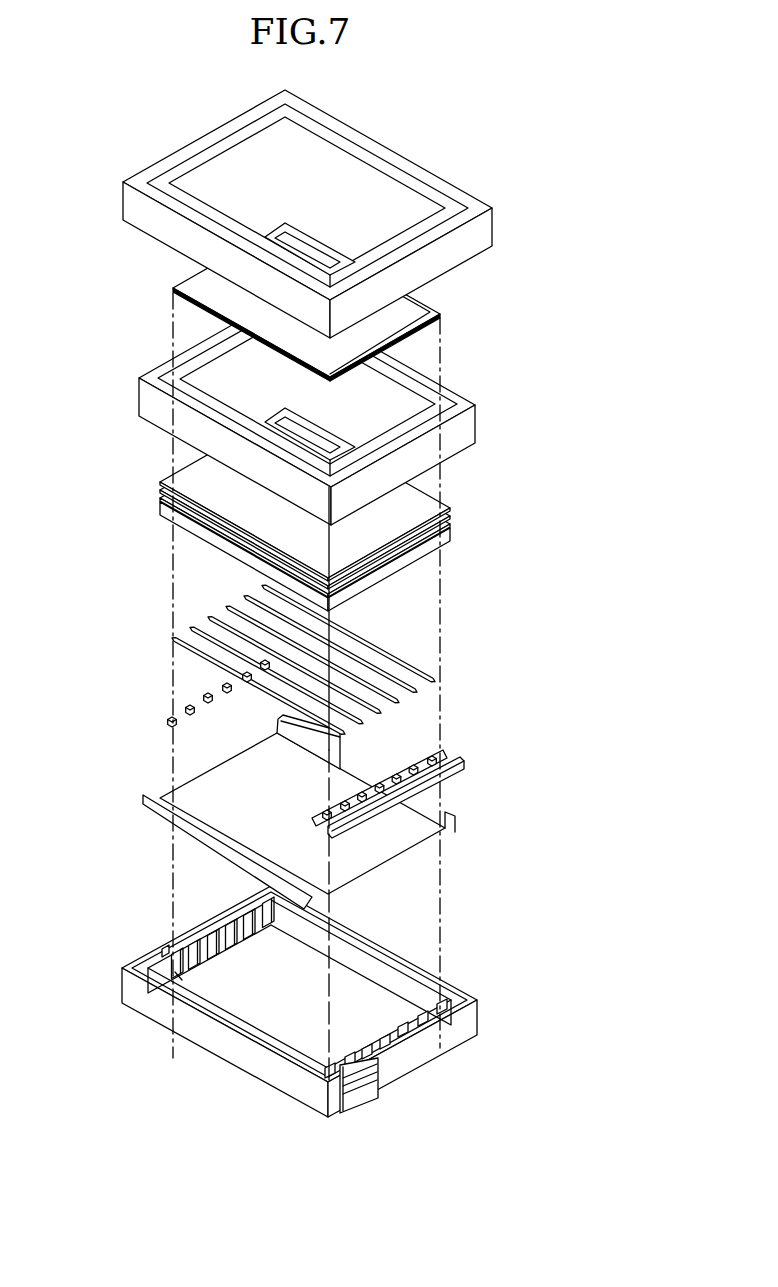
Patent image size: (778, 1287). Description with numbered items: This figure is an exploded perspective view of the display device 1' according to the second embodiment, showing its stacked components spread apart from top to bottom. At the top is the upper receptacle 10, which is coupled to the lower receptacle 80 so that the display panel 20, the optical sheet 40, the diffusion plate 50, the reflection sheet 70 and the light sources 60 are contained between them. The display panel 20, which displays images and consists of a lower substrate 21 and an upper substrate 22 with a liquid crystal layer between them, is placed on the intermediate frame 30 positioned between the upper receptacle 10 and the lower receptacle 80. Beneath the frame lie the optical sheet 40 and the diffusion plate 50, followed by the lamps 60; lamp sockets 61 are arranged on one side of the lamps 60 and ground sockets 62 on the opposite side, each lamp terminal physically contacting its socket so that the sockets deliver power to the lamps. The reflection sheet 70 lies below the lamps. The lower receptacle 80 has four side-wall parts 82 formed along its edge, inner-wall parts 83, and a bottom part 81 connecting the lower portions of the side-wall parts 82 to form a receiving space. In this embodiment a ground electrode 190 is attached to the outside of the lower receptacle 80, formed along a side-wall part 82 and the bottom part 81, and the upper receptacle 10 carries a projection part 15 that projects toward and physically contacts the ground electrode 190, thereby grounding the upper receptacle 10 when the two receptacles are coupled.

The upper receptacle 10 is at (472, 236).
The display panel 20 is at (356, 303).
The lower substrate 21 is at (438, 311).
The upper substrate 22 is at (427, 299).
The projection part 15 is at (365, 309).
The intermediate frame 30 is at (458, 441).
The optical sheet 40 is at (452, 503).
The diffusion plate 50 is at (452, 532).
The light sources 60 is at (392, 653).
The lamp sockets 61 is at (166, 714).
The ground sockets 62 is at (462, 756).
The reflection sheet 70 is at (418, 837).
The lower receptacle 80 is at (271, 1002).
The bottom part 81 is at (160, 963).
The side-wall parts 82 is at (176, 933).
The inner-wall parts 83 is at (165, 946).
The ground electrode 190 is at (372, 1088).
The display device 1' is at (125, 1071).